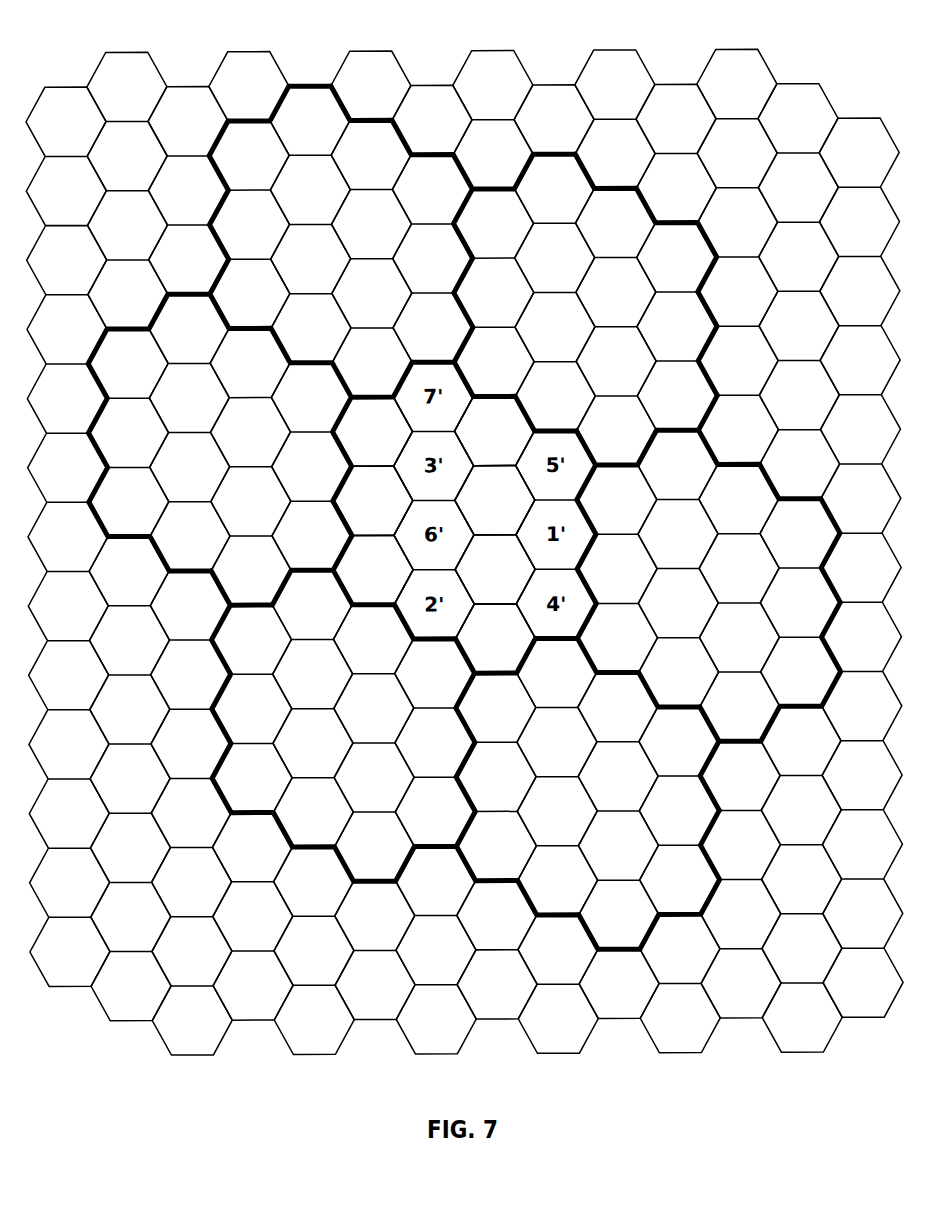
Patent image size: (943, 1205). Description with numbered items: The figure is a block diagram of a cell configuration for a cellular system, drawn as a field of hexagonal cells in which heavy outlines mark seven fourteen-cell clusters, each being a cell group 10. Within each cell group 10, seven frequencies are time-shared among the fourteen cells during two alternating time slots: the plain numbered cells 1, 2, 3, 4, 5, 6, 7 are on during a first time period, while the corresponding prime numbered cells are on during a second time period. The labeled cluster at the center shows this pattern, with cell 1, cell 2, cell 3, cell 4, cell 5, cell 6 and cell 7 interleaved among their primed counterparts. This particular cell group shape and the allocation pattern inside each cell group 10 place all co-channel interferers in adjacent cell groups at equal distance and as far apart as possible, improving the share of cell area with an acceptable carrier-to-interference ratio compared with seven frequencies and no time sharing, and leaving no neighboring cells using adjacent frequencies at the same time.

The cell group 10 is at (291, 88).
The plain numbered cell 1 is at (373, 501).
The plain numbered cell 2 is at (494, 431).
The plain numbered cell 3 is at (495, 570).
The plain numbered cell 4 is at (372, 432).
The plain numbered cell 5 is at (373, 570).
The plain numbered cell 6 is at (495, 500).
The plain numbered cell 7 is at (495, 639).